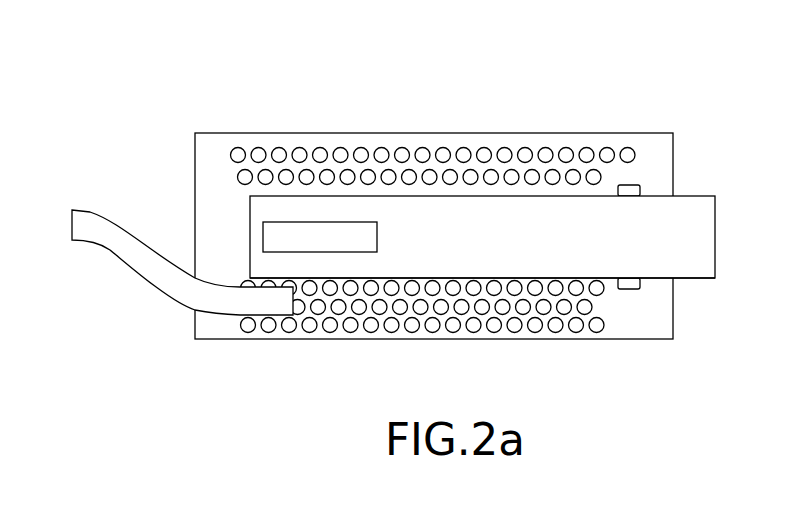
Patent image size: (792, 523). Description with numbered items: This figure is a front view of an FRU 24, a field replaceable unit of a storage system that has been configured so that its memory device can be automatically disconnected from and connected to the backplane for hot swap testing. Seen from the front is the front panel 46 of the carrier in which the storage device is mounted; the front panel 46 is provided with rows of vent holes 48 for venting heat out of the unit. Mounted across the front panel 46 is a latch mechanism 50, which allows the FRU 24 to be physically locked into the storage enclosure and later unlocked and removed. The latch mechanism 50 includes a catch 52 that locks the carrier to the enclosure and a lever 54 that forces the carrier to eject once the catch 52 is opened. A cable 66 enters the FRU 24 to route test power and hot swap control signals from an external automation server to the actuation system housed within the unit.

The FRU 24 is at (413, 218).
The front panel 46 is at (298, 339).
The vent holes 48 is at (428, 332).
The latch mechanism 50 is at (730, 192).
The catch 52 is at (263, 233).
The lever 54 is at (520, 263).
The cable 66 is at (90, 211).